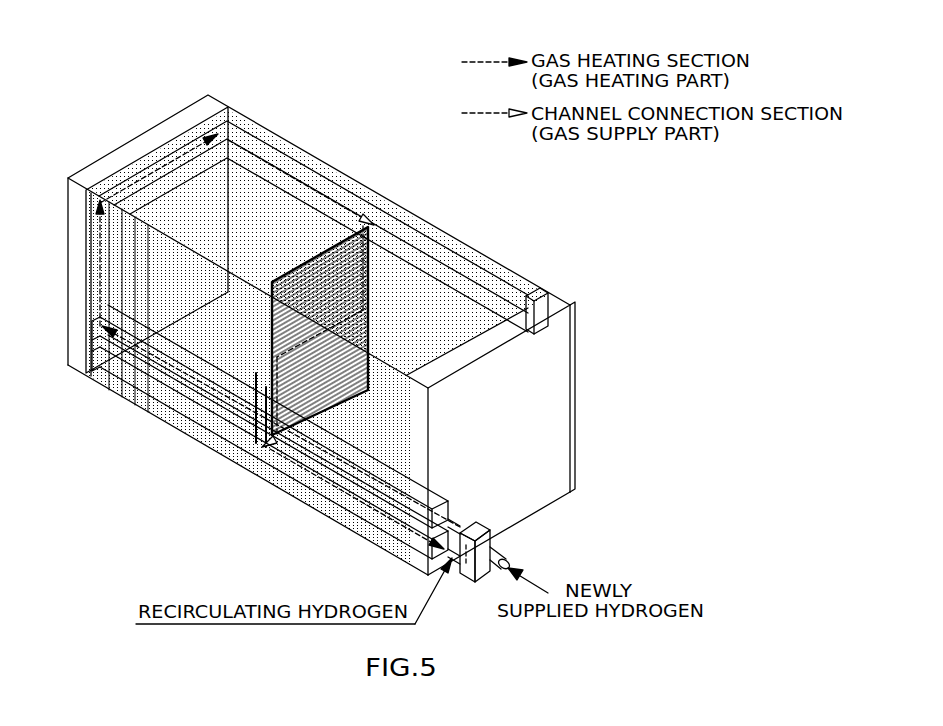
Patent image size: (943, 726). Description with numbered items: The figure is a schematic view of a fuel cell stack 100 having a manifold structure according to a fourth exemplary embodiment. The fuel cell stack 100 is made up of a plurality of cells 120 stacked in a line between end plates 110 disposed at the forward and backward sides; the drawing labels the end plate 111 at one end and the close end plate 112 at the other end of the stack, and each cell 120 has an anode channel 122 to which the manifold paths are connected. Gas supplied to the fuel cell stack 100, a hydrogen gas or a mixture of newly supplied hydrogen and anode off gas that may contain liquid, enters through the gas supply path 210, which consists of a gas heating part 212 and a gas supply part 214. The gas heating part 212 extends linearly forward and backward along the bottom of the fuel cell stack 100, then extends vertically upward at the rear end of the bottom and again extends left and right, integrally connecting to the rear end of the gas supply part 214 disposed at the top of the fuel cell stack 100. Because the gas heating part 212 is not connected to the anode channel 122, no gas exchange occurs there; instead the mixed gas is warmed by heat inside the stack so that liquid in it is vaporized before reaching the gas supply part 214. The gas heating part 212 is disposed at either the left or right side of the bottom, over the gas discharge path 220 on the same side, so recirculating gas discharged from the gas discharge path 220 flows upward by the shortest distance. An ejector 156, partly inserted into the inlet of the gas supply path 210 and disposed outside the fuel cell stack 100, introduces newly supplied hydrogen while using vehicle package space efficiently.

The fuel cell stack 100 is at (122, 128).
The end plate 110 is at (368, 303).
The housing right end wall 111 is at (562, 302).
The close end plate 112 is at (210, 100).
The cell 120 is at (247, 390).
The anode channel 122 is at (287, 357).
The ejector 156 is at (492, 542).
The gas supply path 210 is at (372, 128).
The gas heating part 212 is at (200, 162).
The gas supply part 214 is at (323, 177).
The gas discharge path 220 is at (137, 383).